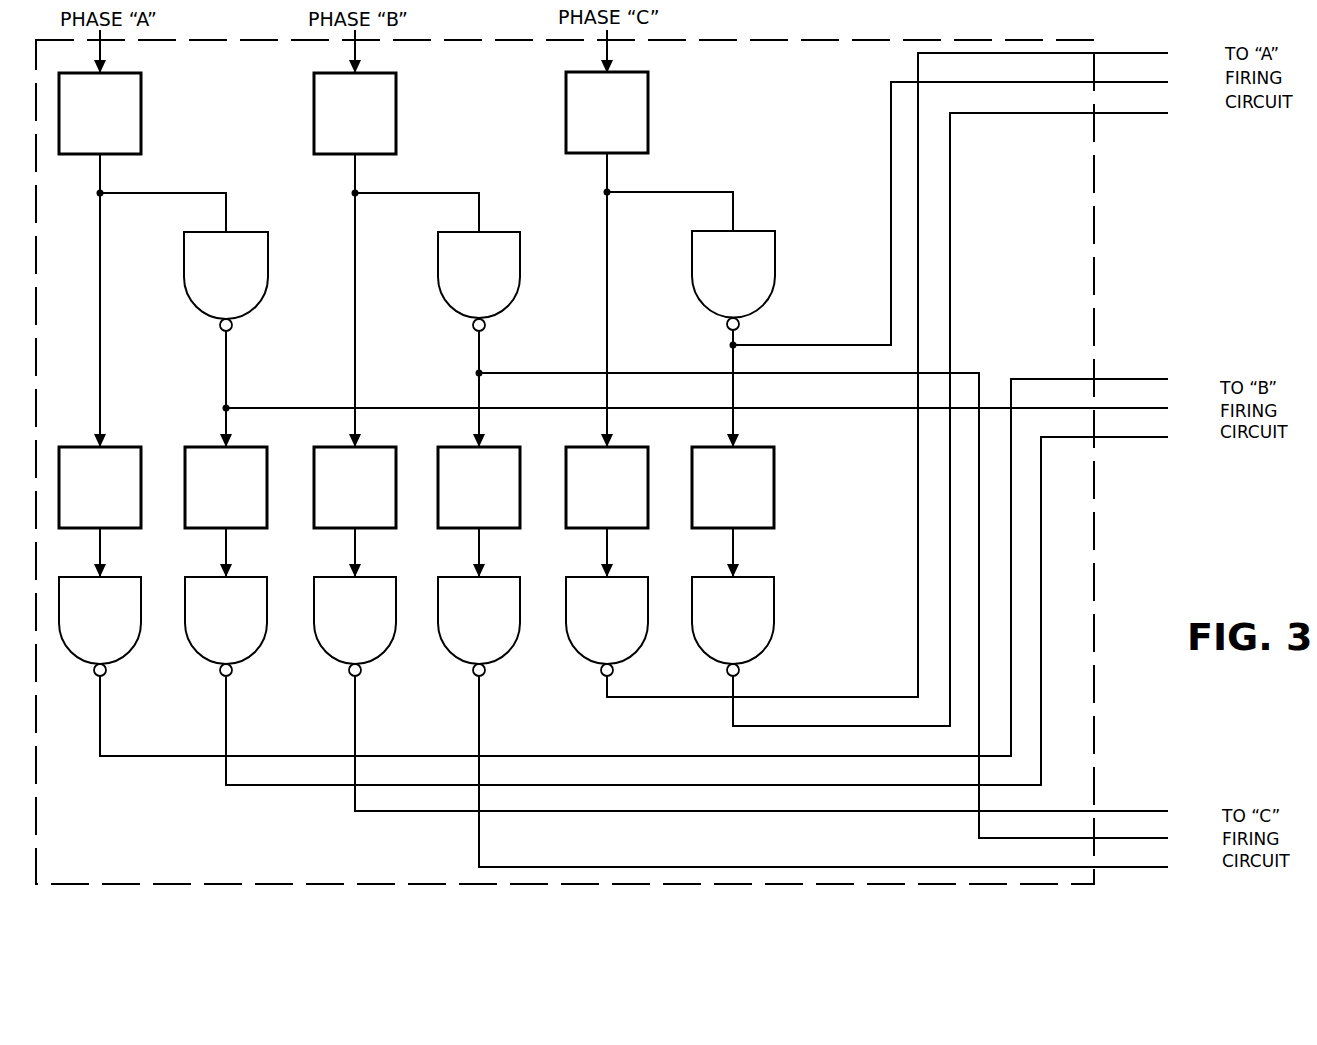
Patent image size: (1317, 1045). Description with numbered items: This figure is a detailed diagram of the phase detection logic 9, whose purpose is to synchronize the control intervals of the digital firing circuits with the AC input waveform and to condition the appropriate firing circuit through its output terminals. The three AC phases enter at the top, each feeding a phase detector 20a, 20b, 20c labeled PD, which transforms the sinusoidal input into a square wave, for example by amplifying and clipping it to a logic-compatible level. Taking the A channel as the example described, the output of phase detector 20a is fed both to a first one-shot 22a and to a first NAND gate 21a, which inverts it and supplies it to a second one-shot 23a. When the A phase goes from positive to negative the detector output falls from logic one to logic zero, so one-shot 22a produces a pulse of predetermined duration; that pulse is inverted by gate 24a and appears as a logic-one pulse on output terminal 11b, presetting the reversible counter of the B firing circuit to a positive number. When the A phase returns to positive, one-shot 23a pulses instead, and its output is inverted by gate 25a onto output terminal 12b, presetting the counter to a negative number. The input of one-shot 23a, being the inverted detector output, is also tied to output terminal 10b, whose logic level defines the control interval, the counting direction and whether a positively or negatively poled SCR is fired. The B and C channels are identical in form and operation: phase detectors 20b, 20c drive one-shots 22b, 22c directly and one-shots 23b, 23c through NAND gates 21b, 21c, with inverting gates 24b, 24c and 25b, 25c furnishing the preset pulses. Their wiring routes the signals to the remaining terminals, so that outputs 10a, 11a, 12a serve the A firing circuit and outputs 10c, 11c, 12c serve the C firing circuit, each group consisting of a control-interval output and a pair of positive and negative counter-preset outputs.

The phase detection logic circuit 9 is at (1096, 213).
The phase detector 20a is at (141, 79).
The phase detector 20b is at (396, 79).
The phase detector 20c is at (648, 78).
The first NAND gate 21a is at (252, 232).
The NAND gate 21b is at (506, 232).
The NAND gate 21c is at (760, 231).
The first one-shot 22a is at (76, 447).
The first one-shot 22b is at (326, 447).
The first one-shot 22c is at (578, 447).
The second one-shot 23a is at (198, 447).
The second one-shot 23b is at (452, 447).
The second one-shot 23c is at (706, 447).
The gate 24a is at (130, 577).
The gate 24b is at (380, 577).
The gate 24c is at (634, 577).
The gate 25a is at (254, 577).
The gate 25b is at (504, 577).
The gate 25c is at (762, 577).
The output terminal 10a is at (1116, 72).
The output terminal 11a is at (1118, 43).
The output terminal 12a is at (1118, 103).
The output terminal 10b is at (1114, 407).
The output terminal 11b is at (1116, 379).
The output terminal 12b is at (1118, 436).
The output terminal 10c is at (1116, 837).
The output terminal 11c is at (1114, 810).
The output terminal 12c is at (1114, 866).